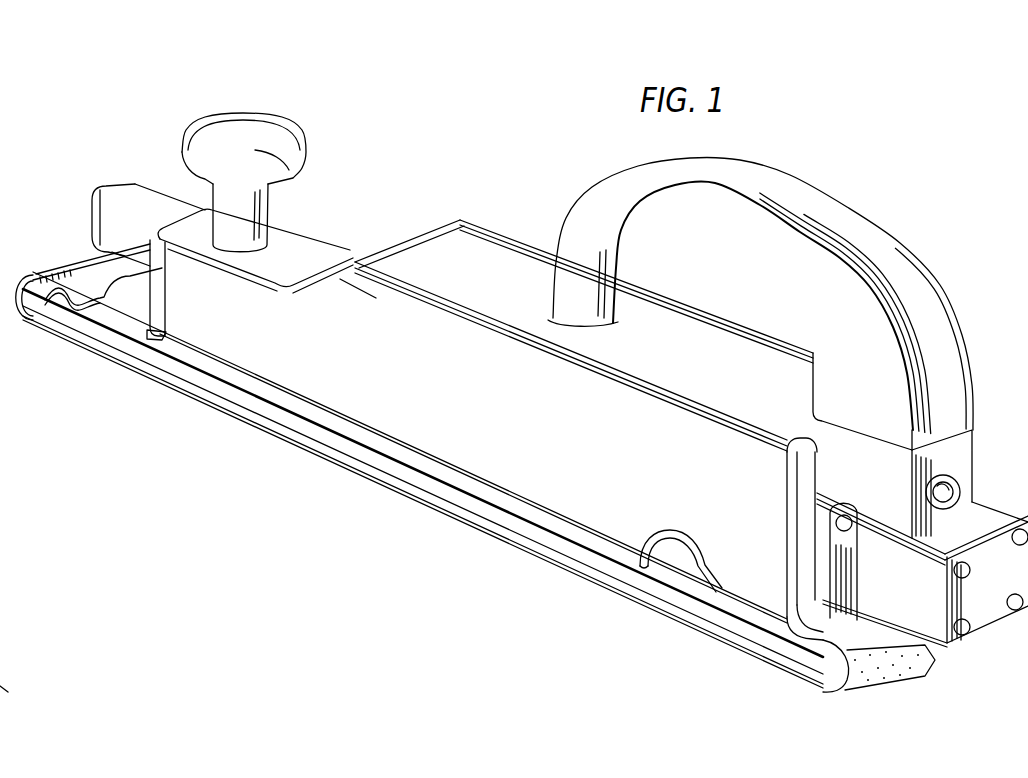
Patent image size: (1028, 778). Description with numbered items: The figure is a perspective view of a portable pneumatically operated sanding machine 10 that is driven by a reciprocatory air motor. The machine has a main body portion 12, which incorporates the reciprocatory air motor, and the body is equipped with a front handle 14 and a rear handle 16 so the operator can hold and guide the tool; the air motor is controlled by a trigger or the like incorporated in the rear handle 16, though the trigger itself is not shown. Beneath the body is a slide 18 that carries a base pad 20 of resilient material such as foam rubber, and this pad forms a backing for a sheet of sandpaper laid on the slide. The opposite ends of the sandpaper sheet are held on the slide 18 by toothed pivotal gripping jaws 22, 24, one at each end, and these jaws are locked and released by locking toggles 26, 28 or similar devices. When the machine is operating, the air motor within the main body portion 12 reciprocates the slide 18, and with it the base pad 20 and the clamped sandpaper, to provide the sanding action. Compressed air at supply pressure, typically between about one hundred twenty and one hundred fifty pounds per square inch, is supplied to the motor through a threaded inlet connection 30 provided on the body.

The portable pneumatically operated sanding machine 10 is at (489, 181).
The main body portion 12 is at (377, 407).
The front handle 14 is at (250, 130).
The rear handle 16 is at (826, 200).
The slide 18 is at (412, 477).
The base pad 20 is at (252, 412).
The toothed pivotal gripping jaw 22 is at (80, 292).
The toothed pivotal gripping jaw 24 is at (862, 638).
The locking toggle 26 is at (62, 298).
The locking toggle 28 is at (668, 540).
The threaded inlet connection 30 is at (961, 486).